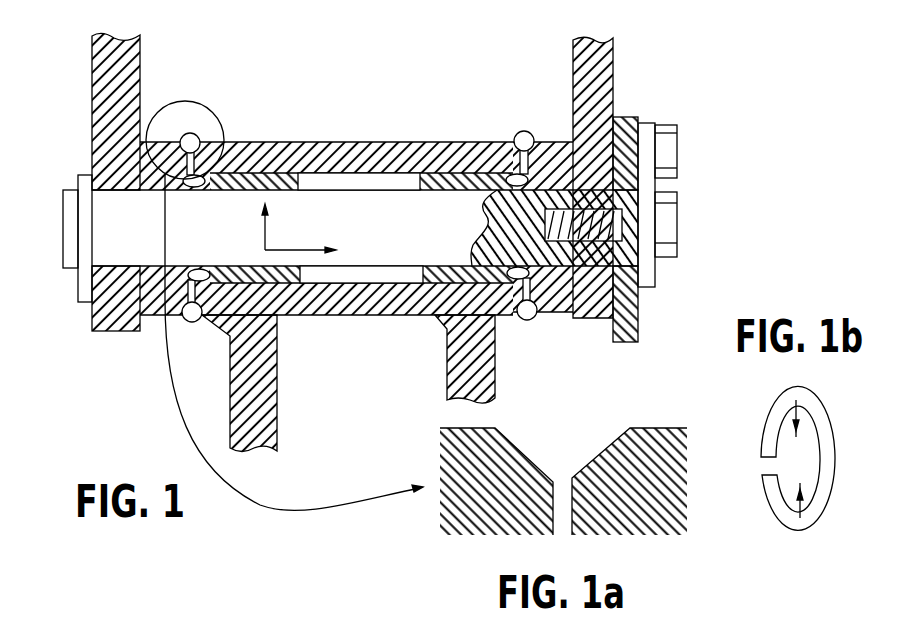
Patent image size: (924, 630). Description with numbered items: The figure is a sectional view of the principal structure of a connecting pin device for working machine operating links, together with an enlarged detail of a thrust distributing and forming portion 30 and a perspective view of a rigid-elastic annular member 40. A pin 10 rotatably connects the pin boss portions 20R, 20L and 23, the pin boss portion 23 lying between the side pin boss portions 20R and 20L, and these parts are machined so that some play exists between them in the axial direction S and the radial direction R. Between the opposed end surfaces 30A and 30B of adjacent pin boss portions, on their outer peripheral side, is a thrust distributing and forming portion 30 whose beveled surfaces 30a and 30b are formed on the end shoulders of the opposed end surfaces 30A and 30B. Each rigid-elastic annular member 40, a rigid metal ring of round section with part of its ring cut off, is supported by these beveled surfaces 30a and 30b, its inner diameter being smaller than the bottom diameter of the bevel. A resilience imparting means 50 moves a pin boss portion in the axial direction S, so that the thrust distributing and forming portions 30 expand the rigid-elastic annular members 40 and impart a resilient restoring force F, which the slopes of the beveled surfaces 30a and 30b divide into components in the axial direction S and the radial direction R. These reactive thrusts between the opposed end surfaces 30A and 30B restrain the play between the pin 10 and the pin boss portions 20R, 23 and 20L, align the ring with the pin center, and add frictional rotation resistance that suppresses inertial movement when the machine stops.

In FIG. 1, the pin 10 is at (63, 213).
In FIG. 1, the pin boss portion 20L is at (168, 142).
In FIG. 1, the pin boss portion 20R is at (553, 141).
In FIG. 1, the pin boss portion 23 is at (342, 142).
In FIG. 1, the thrust distributing and forming portion 30 is at (198, 104).
In FIG. 1A, the thrust distributing and forming portion 30 is at (565, 470).
In FIG. 1A, the beveled surface 30a is at (529, 459).
In FIG. 1A, the beveled surface 30b is at (592, 461).
In FIG. 1A, the opposed end surface 30A is at (553, 512).
In FIG. 1A, the opposed end surface 30B is at (572, 508).
In FIG. 1, the rigid-elastic annular member 40 is at (200, 134).
In FIG. 1B, the rigid-elastic annular member 40 is at (827, 417).
In FIG. 1, the resilience imparting means 50 is at (680, 222).
In FIG. 1, the radial direction R is at (277, 227).
In FIG. 1, the axial direction S is at (311, 249).
In FIG. 1B, the resilient restoring force F is at (796, 437).